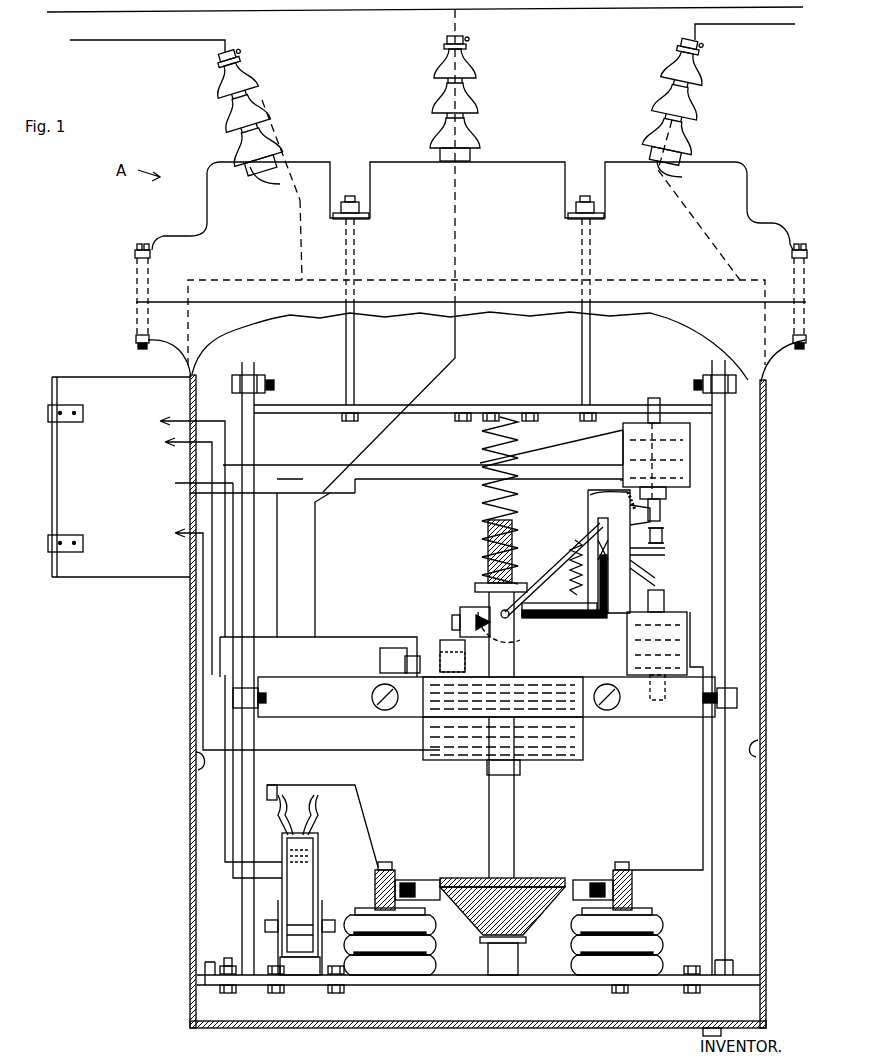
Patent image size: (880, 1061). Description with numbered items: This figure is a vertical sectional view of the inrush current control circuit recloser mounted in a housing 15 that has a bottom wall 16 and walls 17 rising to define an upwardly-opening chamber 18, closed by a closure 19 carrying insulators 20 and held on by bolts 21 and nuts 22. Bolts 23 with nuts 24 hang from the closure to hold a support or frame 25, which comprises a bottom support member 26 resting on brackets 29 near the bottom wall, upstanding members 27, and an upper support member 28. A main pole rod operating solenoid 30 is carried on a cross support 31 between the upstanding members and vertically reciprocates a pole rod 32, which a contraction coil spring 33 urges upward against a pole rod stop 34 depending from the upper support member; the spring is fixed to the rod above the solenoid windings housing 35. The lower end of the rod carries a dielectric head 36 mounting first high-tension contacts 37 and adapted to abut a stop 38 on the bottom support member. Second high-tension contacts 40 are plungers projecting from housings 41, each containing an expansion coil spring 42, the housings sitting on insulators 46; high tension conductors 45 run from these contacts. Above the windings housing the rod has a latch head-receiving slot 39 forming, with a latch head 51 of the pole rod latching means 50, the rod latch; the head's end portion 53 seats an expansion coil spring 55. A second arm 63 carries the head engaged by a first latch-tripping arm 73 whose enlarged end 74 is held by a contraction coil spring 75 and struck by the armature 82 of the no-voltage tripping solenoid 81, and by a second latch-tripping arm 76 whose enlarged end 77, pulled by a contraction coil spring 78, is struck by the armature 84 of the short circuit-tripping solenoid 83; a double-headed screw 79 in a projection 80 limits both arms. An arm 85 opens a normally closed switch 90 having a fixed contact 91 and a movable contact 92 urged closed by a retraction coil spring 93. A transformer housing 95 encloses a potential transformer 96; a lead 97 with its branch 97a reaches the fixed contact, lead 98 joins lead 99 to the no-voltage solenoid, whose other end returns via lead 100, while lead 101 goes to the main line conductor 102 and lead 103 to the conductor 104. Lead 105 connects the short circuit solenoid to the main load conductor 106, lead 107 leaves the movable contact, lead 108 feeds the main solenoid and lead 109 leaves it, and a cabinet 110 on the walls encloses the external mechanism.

The housing 15 is at (190, 665).
The bottom wall 16 is at (270, 1028).
The walls 17 is at (190, 734).
The chamber 18 is at (196, 772).
The closure 19 is at (218, 199).
The insulators 20 is at (262, 104).
The bolts 21 is at (135, 350).
The nuts 22 is at (136, 339).
The bolts 23 is at (348, 205).
The nuts 24 is at (360, 208).
The support or frame 25 is at (194, 381).
The bottom support member 26 is at (453, 985).
The upstanding members 27 is at (243, 603).
The upper support member 28 is at (372, 405).
The brackets 29 is at (195, 995).
The main pole rod operating solenoid 30 is at (452, 767).
The cross support 31 is at (325, 712).
The pole rod 32 is at (512, 553).
The contraction coil spring 33 is at (520, 492).
The pole rod stop 34 is at (505, 413).
The solenoid windings housing 35 is at (583, 738).
The head 36 is at (528, 925).
The first high-tension contacts 37 is at (445, 875).
The stop 38 is at (488, 955).
The latch head-receiving slot 39 is at (516, 632).
The second high-tension contacts 40 is at (413, 876).
The housings 41 is at (410, 880).
The expansion coil spring 42 is at (375, 890).
The high tension conductors 45 is at (358, 820).
The insulators 46 is at (430, 925).
The pole rod latching means 50 is at (558, 543).
The latch head 51 is at (583, 618).
The end portion 53 is at (604, 625).
The expansion coil spring 55 is at (478, 605).
The second arm 63 is at (560, 568).
The first latch-tripping arm 73 is at (598, 525).
The enlarged end 74 is at (652, 515).
The contraction coil spring 75 is at (592, 493).
The second latch-tripping arm 76 is at (575, 560).
The enlarged end 77 is at (656, 580).
The contraction coil spring 78 is at (660, 590).
The double-headed screw 79 is at (664, 536).
The projection 80 is at (665, 551).
The no-voltage tripping solenoid 81 is at (690, 455).
The armature 82 is at (661, 500).
The high-tension short circuit-tripping solenoid 83 is at (627, 658).
The armature 84 is at (665, 597).
The arm 85 is at (445, 630).
The switch 90 is at (420, 624).
The fixed contact 91 is at (387, 650).
The movable contact 92 is at (425, 690).
The retraction coil spring 93 is at (447, 660).
The transformer housing 95 is at (318, 845).
The potential transformer 96 is at (313, 862).
The lead 97 is at (222, 900).
The branch 97a is at (355, 636).
The lead 98 is at (180, 420).
The lead 99 is at (408, 486).
The lead 100 is at (396, 467).
The lead 101 is at (277, 552).
The main line conductor 102 is at (178, 42).
The lead 103 is at (317, 556).
The conductor 104 is at (532, 12).
The lead 105 is at (766, 550).
The main load conductor 106 is at (745, 28).
The lead 107 is at (178, 443).
The lead 108 is at (450, 680).
The lead 109 is at (177, 532).
The cabinet 110 is at (107, 577).